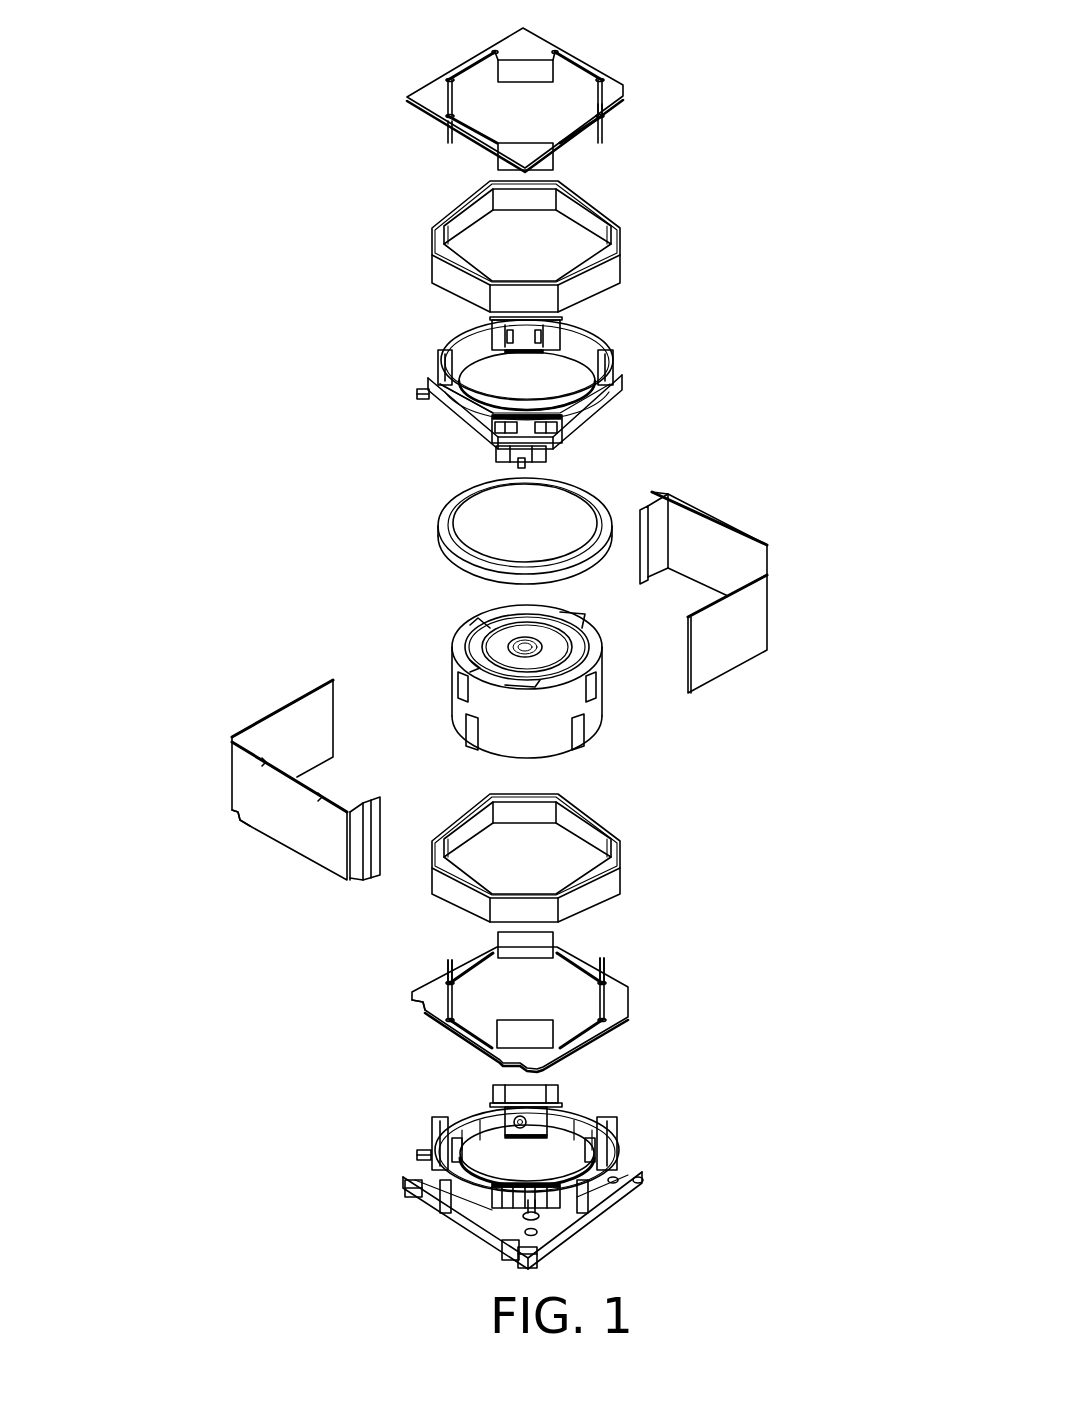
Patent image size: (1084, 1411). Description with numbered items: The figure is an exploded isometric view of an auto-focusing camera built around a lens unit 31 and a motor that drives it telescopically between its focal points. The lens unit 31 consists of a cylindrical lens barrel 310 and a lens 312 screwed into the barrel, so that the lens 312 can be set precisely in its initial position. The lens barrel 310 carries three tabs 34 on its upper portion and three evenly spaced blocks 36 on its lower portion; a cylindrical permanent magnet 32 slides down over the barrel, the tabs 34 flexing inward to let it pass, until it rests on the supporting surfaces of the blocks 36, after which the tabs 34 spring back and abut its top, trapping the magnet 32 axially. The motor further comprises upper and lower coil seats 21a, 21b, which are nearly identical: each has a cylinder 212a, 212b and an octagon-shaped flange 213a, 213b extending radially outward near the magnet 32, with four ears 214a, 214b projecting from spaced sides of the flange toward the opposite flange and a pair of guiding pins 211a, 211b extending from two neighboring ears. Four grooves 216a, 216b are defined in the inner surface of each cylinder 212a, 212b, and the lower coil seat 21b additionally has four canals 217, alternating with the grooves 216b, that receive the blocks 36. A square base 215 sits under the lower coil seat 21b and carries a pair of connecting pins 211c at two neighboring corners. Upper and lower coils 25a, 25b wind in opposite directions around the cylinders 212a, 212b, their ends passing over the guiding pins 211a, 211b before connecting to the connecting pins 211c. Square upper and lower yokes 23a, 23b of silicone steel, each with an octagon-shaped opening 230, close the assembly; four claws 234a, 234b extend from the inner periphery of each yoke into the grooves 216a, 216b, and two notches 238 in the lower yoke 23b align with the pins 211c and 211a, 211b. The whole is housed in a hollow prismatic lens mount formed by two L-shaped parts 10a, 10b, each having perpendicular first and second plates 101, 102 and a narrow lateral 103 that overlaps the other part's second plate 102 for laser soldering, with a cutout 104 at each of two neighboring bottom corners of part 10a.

The L-shaped part 10a is at (269, 775).
The L-shaped part 10b is at (752, 628).
The first plate 101 is at (288, 832).
The second plate 102 is at (322, 715).
The lateral 103 is at (357, 860).
The cutout 104 is at (240, 817).
The upper coil seat 21a is at (533, 384).
The lower coil seat 21b is at (542, 1157).
The guiding pin 211a is at (440, 419).
The guiding pin 211b is at (417, 1155).
The connecting pin 211c is at (505, 1262).
The cylinder 212a is at (600, 405).
The cylinder 212b is at (598, 1195).
The flange 213a is at (588, 423).
The flange 213b is at (572, 1112).
The ear 214a is at (543, 452).
The ear 214b is at (540, 1092).
The base 215 is at (585, 1240).
The groove 216a is at (508, 343).
The groove 216b is at (516, 1118).
The canal 217 is at (473, 1128).
The upper yoke 23a is at (544, 100).
The lower yoke 23b is at (553, 998).
The octagon-shaped opening 230 is at (550, 537).
The claw 234a is at (442, 129).
The claw 234b is at (605, 972).
The notch 238 is at (420, 1005).
The upper coil 25a is at (618, 236).
The lower coil 25b is at (616, 852).
The lens unit 31 is at (544, 672).
The lens barrel 310 is at (592, 654).
The lens 312 is at (487, 622).
The permanent magnet 32 is at (445, 522).
The tab 34 is at (592, 696).
The block 36 is at (580, 738).